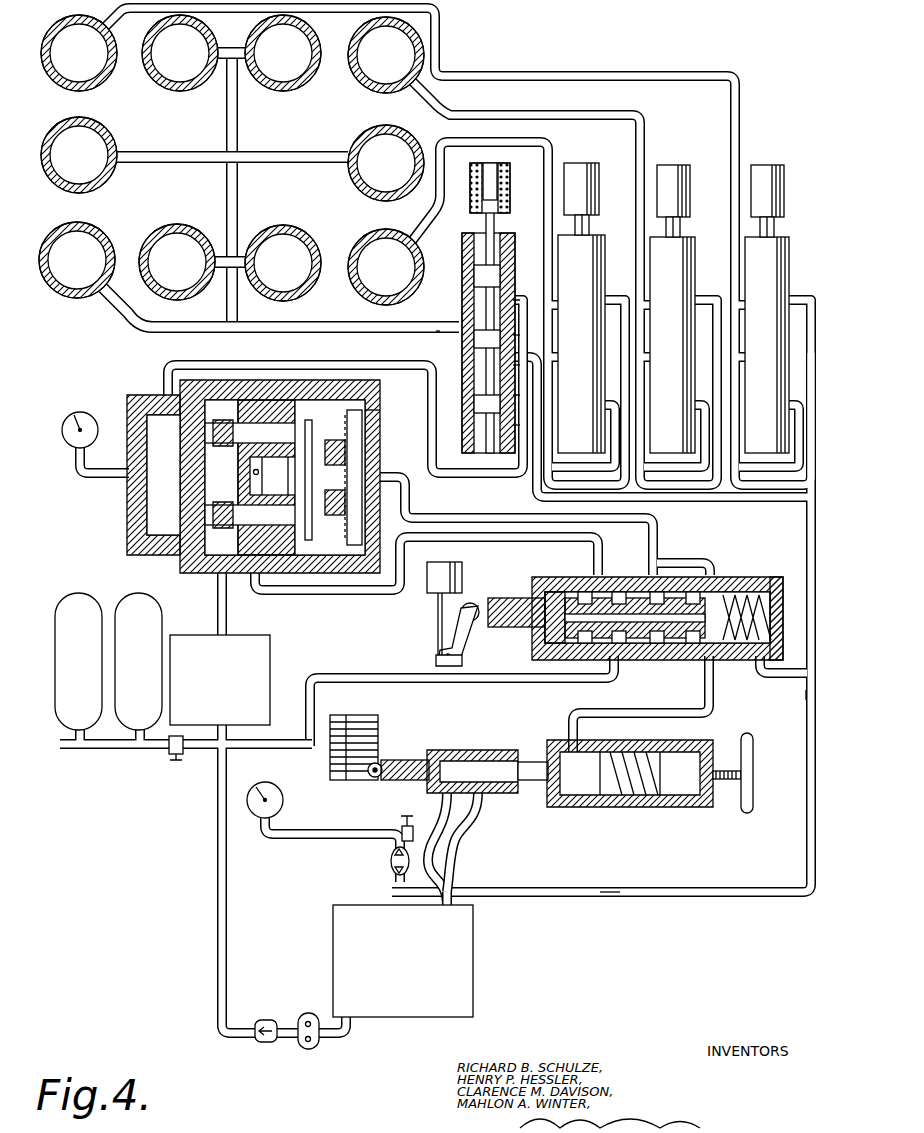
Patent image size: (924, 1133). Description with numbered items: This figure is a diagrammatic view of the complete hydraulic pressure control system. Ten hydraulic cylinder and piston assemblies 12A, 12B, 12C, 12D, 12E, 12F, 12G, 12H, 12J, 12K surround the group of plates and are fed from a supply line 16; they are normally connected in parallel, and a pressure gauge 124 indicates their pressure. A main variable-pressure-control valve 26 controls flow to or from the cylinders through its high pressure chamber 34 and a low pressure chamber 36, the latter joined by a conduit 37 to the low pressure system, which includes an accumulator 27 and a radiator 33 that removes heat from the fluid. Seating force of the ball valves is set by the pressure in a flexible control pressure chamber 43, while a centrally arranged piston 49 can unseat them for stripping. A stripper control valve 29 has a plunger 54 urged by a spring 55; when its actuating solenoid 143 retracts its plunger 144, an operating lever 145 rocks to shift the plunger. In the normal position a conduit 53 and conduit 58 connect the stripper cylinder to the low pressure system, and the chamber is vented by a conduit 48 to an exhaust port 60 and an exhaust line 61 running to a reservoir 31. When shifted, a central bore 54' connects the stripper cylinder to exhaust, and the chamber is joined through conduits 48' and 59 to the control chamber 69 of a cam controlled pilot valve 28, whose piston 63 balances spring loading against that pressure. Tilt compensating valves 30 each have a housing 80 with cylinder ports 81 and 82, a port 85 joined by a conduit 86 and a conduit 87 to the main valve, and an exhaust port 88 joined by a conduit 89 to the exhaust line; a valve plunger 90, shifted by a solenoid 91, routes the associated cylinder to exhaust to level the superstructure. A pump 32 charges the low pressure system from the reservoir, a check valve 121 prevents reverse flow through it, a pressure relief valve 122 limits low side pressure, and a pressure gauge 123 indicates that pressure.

The hydraulic cylinder and piston assembly 12A is at (79, 53).
The hydraulic cylinder and piston assembly 12B is at (79, 155).
The hydraulic cylinder and piston assembly 12C is at (77, 260).
The hydraulic cylinder and piston assembly 12D is at (180, 53).
The hydraulic cylinder and piston assembly 12E is at (177, 262).
The hydraulic cylinder and piston assembly 12F is at (283, 53).
The hydraulic cylinder and piston assembly 12G is at (283, 263).
The hydraulic cylinder and piston assembly 12H is at (386, 55).
The hydraulic cylinder and piston assembly 12J is at (386, 163).
The hydraulic cylinder and piston assembly 12K is at (386, 267).
The supply line 16 is at (178, 160).
The main variable-pressure-control valve 26 is at (232, 476).
The accumulator 27 is at (60, 705).
The cam controlled pilot valve 28 is at (531, 806).
The stripper control valve 29 is at (584, 623).
The solenoid actuated tilt compensating valve 30 is at (621, 308).
The reservoir 31 is at (456, 991).
The pump 32 is at (310, 1049).
The heat exchanger or radiator 33 is at (256, 652).
The high pressure chamber 34 is at (163, 475).
The low pressure chamber 36 is at (221, 477).
The conduit 37 is at (228, 615).
The flexible control pressure chamber 43 is at (360, 432).
The conduit 48 is at (518, 526).
The conduit 48' is at (695, 556).
The piston 49 is at (275, 476).
The conduit 53 is at (380, 594).
The plunger 54 is at (516, 630).
The central bore 54' is at (624, 648).
The spring 55 is at (750, 668).
The conduit 58 is at (614, 676).
The conduit 59 is at (700, 686).
The exhaust port 60 is at (800, 688).
The exhaust line 61 is at (604, 890).
The piston 63 is at (340, 327).
The control chamber 69 is at (770, 492).
The housing 80 is at (481, 308).
The cylinder port 81 is at (449, 328).
The cylinder port 82 is at (370, 410).
The port 85 is at (522, 300).
The conduit 86 is at (522, 366).
The conduit 87 is at (515, 472).
The exhaust port 88 is at (522, 337).
The conduit 89 is at (522, 430).
The valve plunger 90 is at (494, 218).
The solenoid 91 is at (504, 188).
The check valve 121 is at (277, 1006).
The pressure relief valve 122 is at (390, 862).
The pressure gauge 123 is at (284, 800).
The pressure gauge 124 is at (88, 406).
The actuating solenoid 143 is at (478, 560).
The plunger 144 is at (458, 632).
The operating lever 145 is at (438, 658).